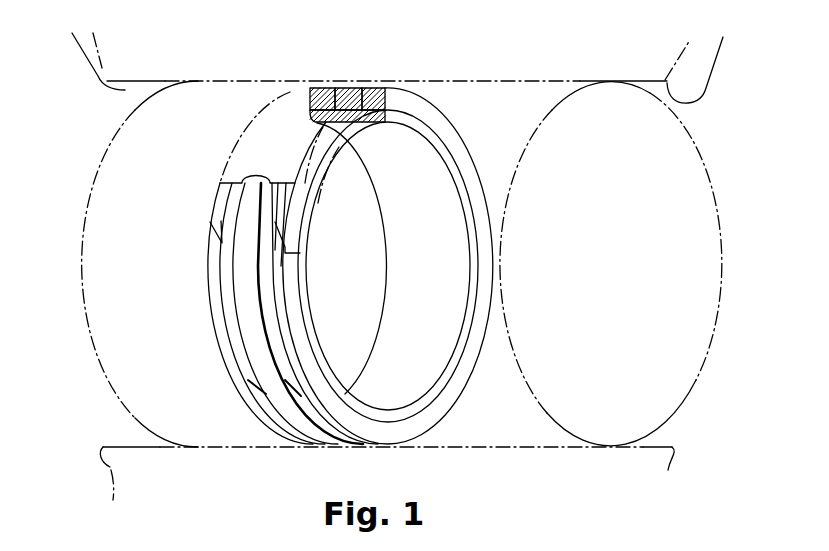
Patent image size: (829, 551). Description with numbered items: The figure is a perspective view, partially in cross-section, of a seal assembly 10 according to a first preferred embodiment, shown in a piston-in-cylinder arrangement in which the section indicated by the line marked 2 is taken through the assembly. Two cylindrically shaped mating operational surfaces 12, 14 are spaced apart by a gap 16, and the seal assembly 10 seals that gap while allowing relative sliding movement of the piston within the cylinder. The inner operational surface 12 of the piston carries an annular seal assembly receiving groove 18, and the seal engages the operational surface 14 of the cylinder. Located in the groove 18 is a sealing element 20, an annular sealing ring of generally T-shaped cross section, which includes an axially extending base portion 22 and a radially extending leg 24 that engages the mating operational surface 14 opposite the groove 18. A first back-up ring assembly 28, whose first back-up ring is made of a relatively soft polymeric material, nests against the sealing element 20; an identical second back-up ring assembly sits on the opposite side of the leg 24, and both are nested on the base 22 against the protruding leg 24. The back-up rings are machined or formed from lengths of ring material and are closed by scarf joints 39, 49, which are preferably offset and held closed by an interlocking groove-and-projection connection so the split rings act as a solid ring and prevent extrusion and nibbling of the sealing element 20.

The section line 2- 2 is at (227, 110).
The seal assembly 10 is at (198, 353).
The inner operational surface 12 is at (141, 108).
The mating operational surface 14 is at (67, 422).
The gap 16 is at (720, 405).
The seal assembly receiving groove 18 is at (303, 121).
The sealing element 20 is at (364, 85).
The base portion 22 is at (387, 172).
The leg 24 is at (347, 86).
The first back-up ring assembly 28 is at (413, 110).
The scarf joint 39 is at (288, 383).
The scarf joint 49 is at (212, 224).